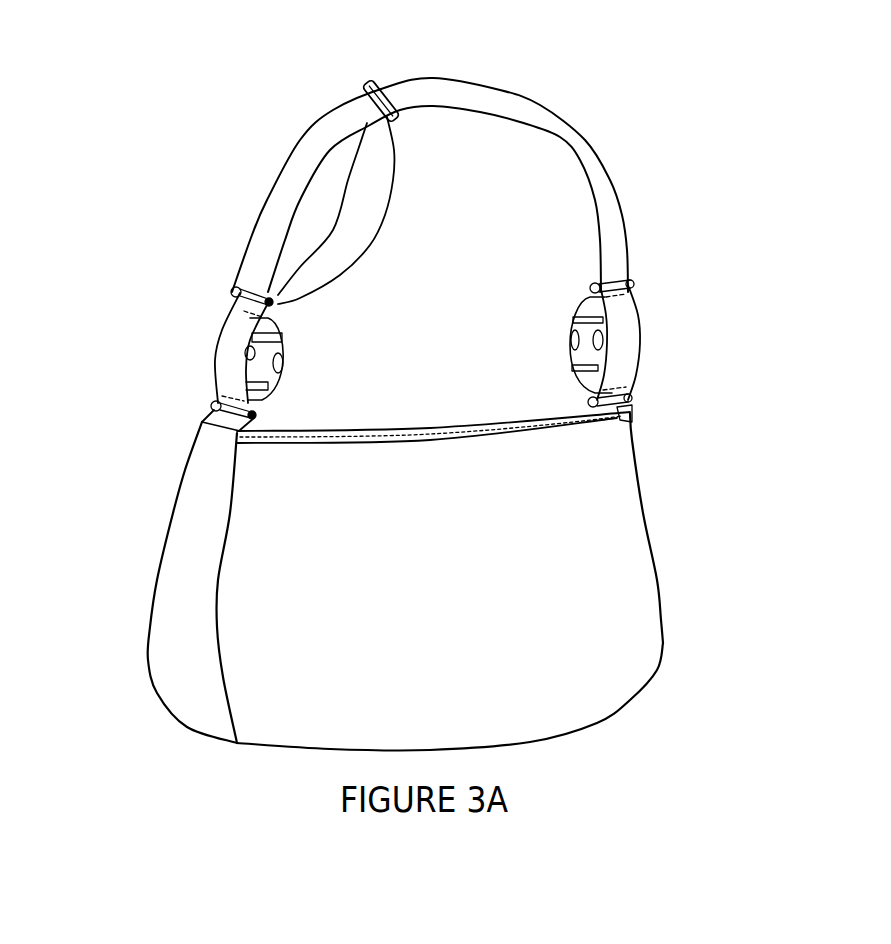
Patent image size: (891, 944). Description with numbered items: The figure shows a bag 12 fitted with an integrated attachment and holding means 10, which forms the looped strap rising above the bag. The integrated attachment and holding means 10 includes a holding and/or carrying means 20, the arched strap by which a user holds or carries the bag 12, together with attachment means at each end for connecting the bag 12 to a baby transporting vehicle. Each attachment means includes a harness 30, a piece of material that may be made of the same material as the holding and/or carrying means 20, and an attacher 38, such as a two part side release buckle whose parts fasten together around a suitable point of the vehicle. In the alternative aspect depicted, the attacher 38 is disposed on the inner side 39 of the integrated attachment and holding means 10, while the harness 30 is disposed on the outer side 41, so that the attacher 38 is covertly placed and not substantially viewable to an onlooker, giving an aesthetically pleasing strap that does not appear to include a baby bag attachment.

The integrated attachment and holding means 10 is at (471, 165).
The bag 12 is at (658, 587).
The holding and/or carrying means 20 is at (572, 147).
The harness 30 is at (232, 348).
The attacher 38 is at (273, 378).
The inner side 39 is at (413, 133).
The outer side 41 is at (453, 75).